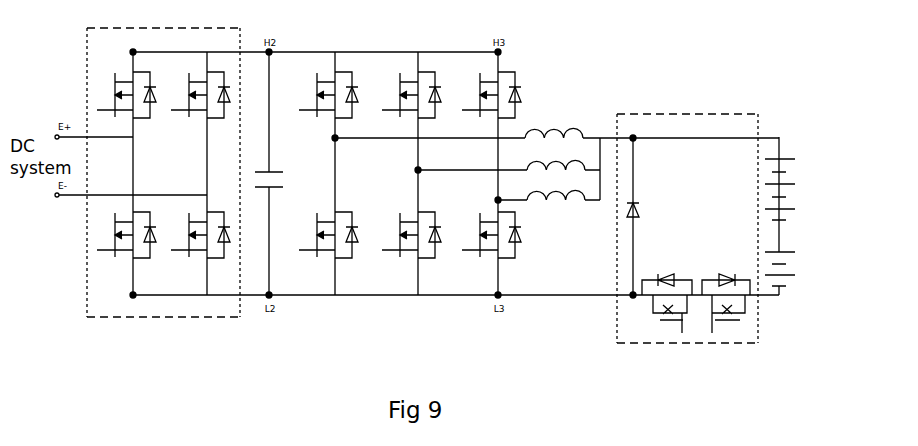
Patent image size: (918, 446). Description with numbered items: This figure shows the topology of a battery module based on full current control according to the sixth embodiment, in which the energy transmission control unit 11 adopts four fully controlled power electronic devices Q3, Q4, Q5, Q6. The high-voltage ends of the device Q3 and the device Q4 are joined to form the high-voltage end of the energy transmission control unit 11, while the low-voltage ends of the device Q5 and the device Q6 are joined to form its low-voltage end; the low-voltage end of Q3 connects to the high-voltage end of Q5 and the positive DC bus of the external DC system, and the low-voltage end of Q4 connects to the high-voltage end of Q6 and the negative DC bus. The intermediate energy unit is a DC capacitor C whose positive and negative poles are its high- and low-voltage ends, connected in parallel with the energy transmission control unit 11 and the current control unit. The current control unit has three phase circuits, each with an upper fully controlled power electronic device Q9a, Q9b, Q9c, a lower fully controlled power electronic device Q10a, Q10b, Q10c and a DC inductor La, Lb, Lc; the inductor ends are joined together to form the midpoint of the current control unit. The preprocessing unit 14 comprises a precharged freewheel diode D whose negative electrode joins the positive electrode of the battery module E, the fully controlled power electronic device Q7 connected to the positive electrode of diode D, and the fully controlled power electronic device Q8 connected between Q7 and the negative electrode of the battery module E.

The energy transmission control unit 11 is at (163, 189).
The preprocessing unit 14 is at (712, 242).
The fully controlled power electronic device Q3 is at (125, 95).
The fully controlled power electronic device Q4 is at (199, 95).
The fully controlled power electronic device Q5 is at (125, 235).
The fully controlled power electronic device Q6 is at (199, 235).
The DC capacitor C is at (274, 173).
The upper fully controlled power electronic device Q9a is at (324, 95).
The upper fully controlled power electronic device Q9b is at (407, 95).
The upper fully controlled power electronic device Q9c is at (487, 95).
The lower fully controlled power electronic device Q10a is at (321, 235).
The lower fully controlled power electronic device Q10b is at (404, 235).
The lower fully controlled power electronic device Q10c is at (485, 235).
The DC inductor La is at (554, 125).
The DC inductor Lb is at (556, 159).
The DC inductor Lc is at (556, 205).
The precharged freewheel diode D is at (639, 210).
The fully controlled power electronic device Q7 is at (667, 306).
The fully controlled power electronic device Q8 is at (726, 306).
The battery module E is at (786, 216).